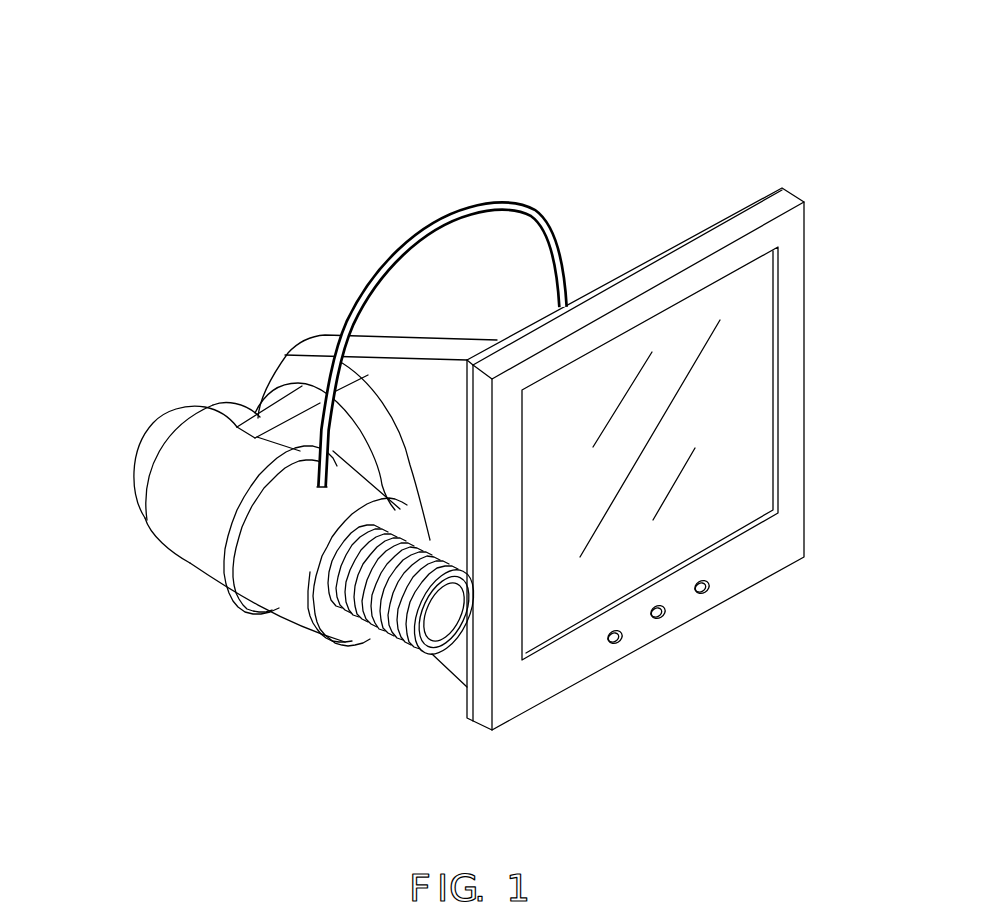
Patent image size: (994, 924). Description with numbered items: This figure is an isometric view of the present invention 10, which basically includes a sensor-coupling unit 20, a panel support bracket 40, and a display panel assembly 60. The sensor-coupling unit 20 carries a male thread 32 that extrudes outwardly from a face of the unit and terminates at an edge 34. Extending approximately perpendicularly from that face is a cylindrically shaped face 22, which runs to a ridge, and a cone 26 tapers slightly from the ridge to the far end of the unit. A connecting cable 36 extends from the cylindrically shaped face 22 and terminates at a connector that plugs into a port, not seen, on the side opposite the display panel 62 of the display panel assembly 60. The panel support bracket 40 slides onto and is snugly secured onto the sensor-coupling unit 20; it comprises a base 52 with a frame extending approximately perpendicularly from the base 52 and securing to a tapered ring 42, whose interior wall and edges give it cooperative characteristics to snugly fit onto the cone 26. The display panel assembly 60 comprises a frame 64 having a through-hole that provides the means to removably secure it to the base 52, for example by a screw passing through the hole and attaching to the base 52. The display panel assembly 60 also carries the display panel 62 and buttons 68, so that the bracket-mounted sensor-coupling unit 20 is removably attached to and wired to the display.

The present invention 10 is at (534, 124).
The sensor-coupling unit 20 is at (135, 469).
The cylindrically shaped face 22 is at (310, 565).
The cone 26 is at (173, 432).
The male thread 32 is at (393, 630).
The edge 34 is at (425, 650).
The connecting cable 36 is at (441, 228).
The panel support bracket 40 is at (147, 536).
The tapered ring 42 is at (203, 550).
The base 52 is at (292, 365).
The display panel assembly 60 is at (814, 222).
The display panel 62 is at (745, 455).
The frame 64 is at (388, 340).
The buttons 68 is at (709, 589).